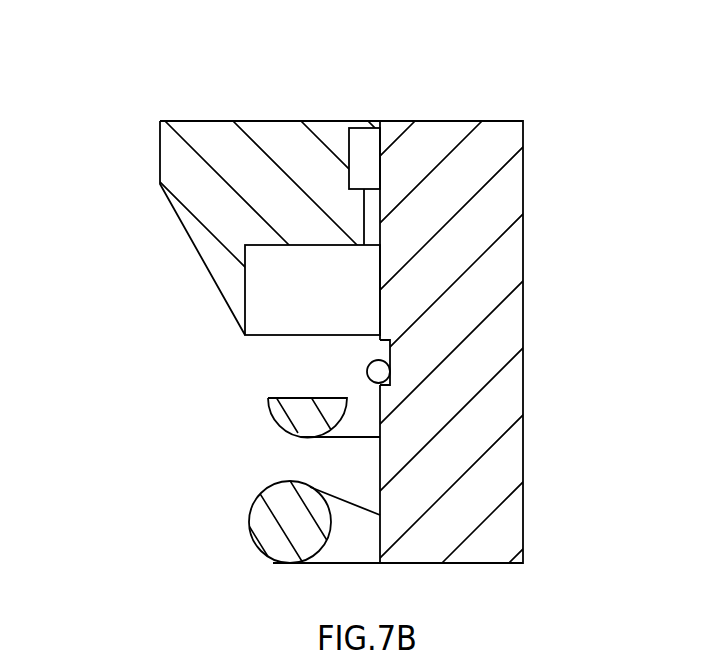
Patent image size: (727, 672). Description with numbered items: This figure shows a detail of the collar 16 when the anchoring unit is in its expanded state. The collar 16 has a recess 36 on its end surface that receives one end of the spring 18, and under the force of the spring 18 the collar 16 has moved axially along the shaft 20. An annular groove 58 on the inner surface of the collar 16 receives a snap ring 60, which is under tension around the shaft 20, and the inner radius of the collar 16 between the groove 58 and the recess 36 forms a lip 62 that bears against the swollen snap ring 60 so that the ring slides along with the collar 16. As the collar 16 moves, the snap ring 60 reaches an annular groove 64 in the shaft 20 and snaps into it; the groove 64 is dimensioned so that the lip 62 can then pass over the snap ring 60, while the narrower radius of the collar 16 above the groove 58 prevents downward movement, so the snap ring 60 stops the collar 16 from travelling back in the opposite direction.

The collar 16 is at (172, 160).
The spring 18 is at (292, 515).
The shaft 20 is at (493, 150).
The recess 36 is at (285, 297).
The annular groove 58 is at (365, 148).
The snap ring 60 is at (378, 373).
The lip 62 is at (365, 189).
The annular groove 64 is at (390, 350).